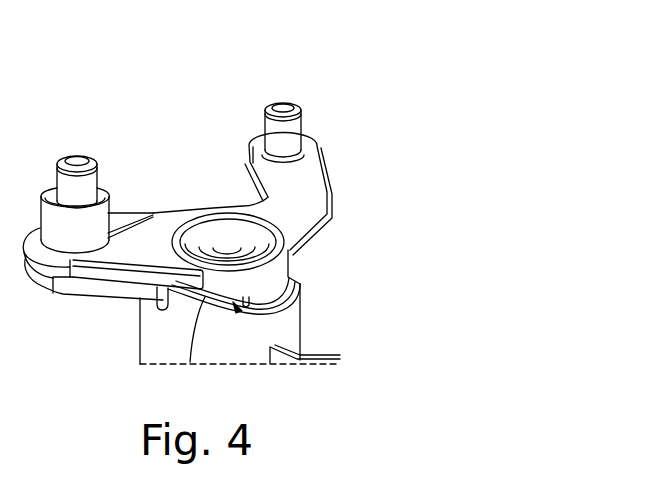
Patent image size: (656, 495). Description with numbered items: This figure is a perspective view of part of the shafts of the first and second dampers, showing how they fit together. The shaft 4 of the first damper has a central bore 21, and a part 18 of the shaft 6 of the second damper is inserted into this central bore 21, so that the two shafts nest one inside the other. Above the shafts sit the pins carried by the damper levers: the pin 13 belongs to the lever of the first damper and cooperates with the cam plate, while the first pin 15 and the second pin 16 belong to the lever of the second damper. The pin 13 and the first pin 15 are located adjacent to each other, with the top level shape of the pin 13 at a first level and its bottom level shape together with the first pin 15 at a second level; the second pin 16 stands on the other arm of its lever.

The shaft 4 is at (287, 337).
The shaft 6 is at (197, 333).
The pin 13 is at (99, 200).
The first pin 15 is at (85, 234).
The second pin 16 is at (290, 108).
The part of shaft 18 is at (275, 285).
The central bore 21 is at (239, 313).